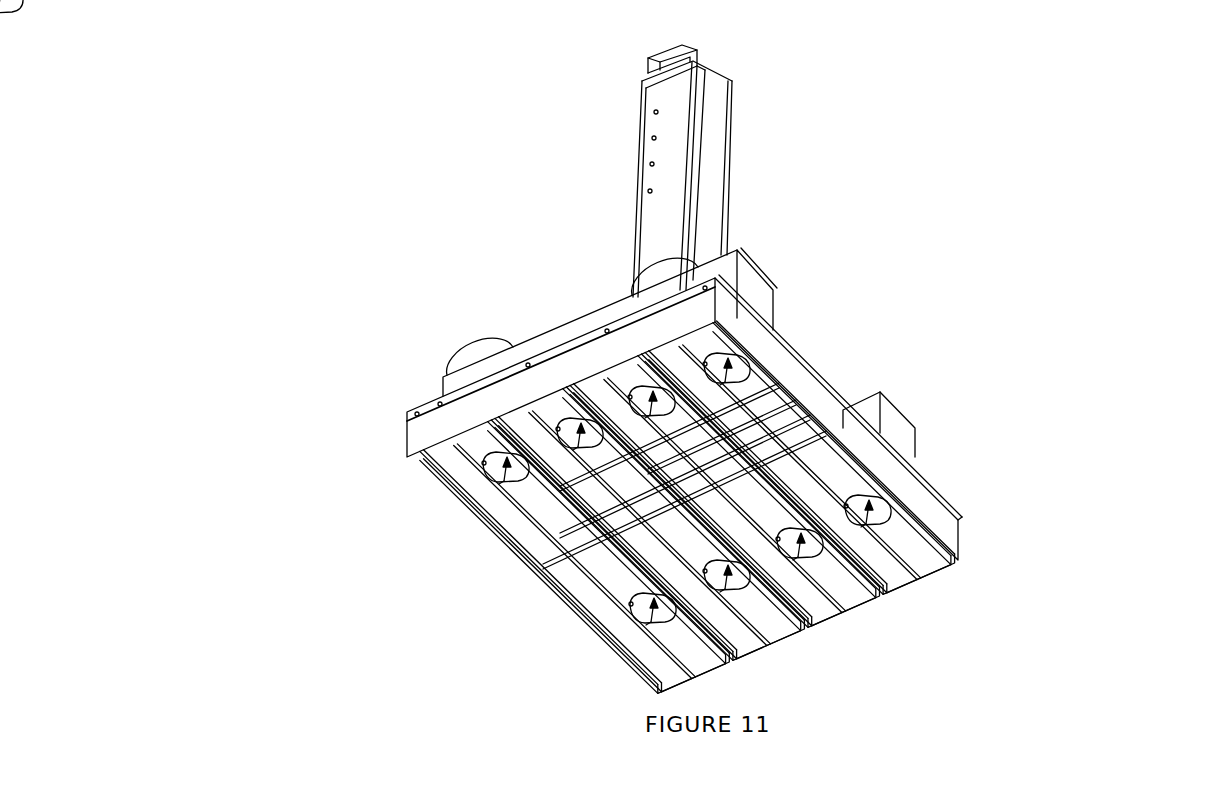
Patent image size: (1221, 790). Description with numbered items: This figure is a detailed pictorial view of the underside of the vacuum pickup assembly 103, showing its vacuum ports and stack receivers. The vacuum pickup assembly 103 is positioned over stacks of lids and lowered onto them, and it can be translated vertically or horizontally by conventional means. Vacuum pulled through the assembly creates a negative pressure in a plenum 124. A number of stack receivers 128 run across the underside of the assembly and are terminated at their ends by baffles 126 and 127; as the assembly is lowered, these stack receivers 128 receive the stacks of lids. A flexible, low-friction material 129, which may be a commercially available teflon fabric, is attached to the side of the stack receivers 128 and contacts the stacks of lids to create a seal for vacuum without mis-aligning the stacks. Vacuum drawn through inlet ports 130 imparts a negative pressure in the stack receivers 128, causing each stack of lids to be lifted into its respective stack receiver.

The vacuum pickup assembly 103 is at (1052, 109).
The plenum 124 is at (843, 319).
The baffle 126 is at (425, 437).
The baffle 127 is at (960, 545).
The stack receivers 128 is at (823, 465).
The flexible, low-friction material 129 is at (696, 469).
The inlet ports 130 is at (727, 370).